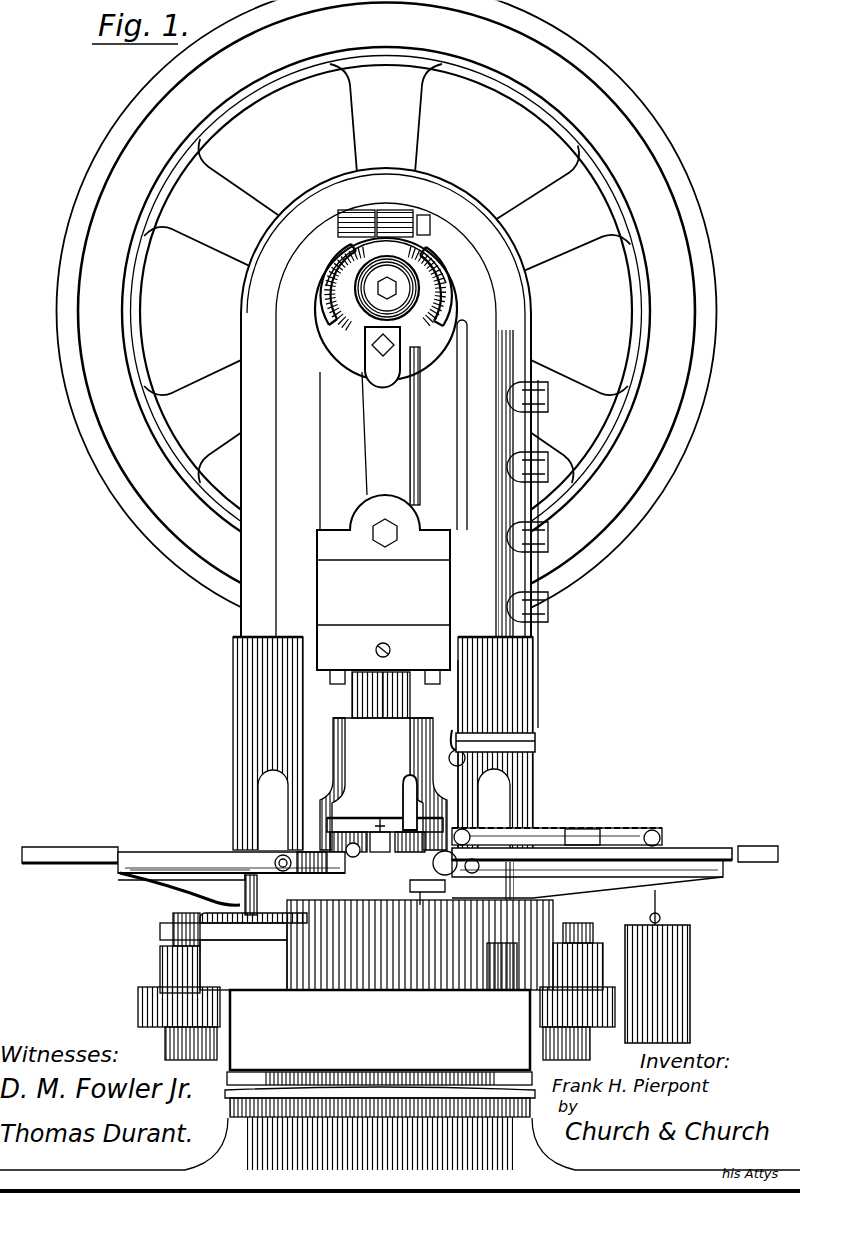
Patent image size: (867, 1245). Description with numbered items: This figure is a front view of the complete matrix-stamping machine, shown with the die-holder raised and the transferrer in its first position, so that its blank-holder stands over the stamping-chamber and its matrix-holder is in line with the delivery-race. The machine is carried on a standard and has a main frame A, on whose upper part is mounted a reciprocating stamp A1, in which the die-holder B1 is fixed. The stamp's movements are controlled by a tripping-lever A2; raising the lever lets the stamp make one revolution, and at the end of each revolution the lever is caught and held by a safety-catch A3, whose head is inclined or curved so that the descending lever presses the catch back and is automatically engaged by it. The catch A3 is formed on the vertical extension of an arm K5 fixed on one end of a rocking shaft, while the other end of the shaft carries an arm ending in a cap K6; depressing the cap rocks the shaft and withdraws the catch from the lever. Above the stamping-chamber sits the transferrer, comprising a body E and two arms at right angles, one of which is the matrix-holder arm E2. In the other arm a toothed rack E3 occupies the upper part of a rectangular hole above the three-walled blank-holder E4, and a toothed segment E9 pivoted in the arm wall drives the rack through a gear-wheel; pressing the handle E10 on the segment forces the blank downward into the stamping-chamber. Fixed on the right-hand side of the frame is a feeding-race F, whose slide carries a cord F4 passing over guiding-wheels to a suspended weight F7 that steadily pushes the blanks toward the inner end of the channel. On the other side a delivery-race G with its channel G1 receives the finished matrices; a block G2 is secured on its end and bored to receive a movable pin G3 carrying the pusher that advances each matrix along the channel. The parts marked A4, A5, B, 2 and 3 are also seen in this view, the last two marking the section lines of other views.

The main frame A is at (370, 983).
The reciprocating stamp A1 is at (383, 589).
The tripping-lever A2 is at (536, 745).
The safety-catch A3 is at (470, 725).
The cylinder casing A4 is at (338, 740).
The base tier A5 is at (320, 917).
The ram B is at (352, 802).
The die-holder B1 is at (403, 702).
The body of transferrer E is at (400, 880).
The matrix-holder arm E2 is at (337, 907).
The toothed rack E3 is at (325, 800).
The blank-holder E4 is at (330, 830).
The toothed segment E9 is at (452, 872).
The handle E10 is at (386, 491).
The feeding-race F is at (750, 864).
The cord F4 is at (552, 818).
The weight F7 is at (690, 968).
The delivery-race G is at (194, 860).
The channel of delivery-race G1 is at (96, 866).
The block G2 is at (312, 868).
The movable pin G3 is at (360, 903).
The arm K5 is at (533, 768).
The cap K6 is at (410, 883).
The rail 2 is at (235, 818).
The standard 3 is at (275, 705).